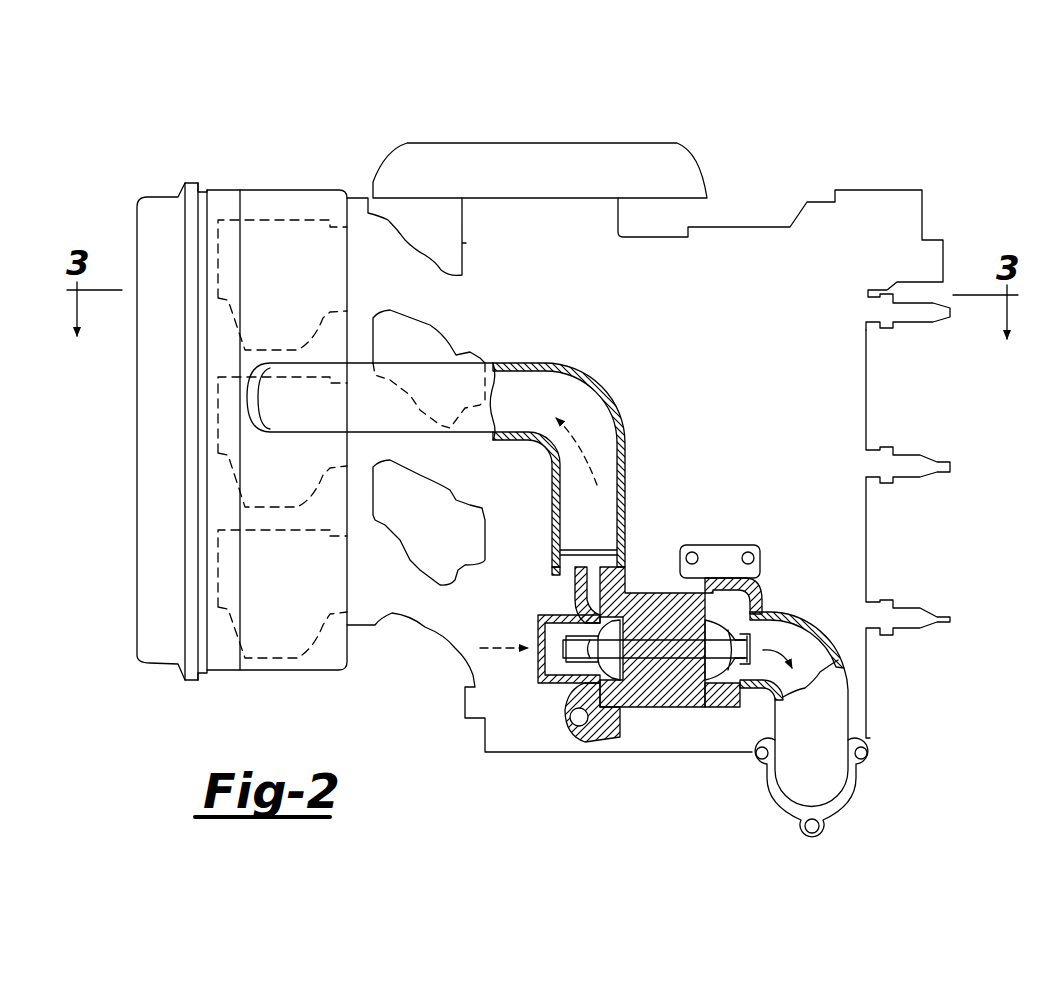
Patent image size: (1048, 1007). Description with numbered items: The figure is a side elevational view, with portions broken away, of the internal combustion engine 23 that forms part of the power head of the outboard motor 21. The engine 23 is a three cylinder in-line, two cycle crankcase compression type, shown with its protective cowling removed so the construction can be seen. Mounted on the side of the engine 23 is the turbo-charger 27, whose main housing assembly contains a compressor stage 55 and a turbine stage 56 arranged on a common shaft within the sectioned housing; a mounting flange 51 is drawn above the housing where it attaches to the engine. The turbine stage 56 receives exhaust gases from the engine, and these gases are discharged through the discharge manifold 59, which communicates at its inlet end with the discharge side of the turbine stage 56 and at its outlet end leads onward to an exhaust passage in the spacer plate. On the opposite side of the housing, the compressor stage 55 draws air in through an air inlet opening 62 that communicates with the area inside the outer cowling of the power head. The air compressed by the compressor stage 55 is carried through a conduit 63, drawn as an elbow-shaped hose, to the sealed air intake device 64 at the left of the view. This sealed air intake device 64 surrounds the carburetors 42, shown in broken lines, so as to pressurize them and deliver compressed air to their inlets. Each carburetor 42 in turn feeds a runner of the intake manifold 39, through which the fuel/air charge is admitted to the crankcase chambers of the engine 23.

The outboard motor 21 is at (906, 433).
The internal combustion engine 23 is at (879, 186).
The turbo-charger 27 is at (656, 710).
The intake manifold 39 is at (405, 263).
The carburetor 42 is at (312, 220).
The mounting flange 51 is at (723, 553).
The compressor stage 55 is at (553, 700).
The turbine stage 56 is at (722, 708).
The discharge manifold 59 is at (800, 615).
The air inlet opening 62 is at (540, 672).
The conduit 63 is at (618, 432).
The sealed air intake device 64 is at (270, 208).